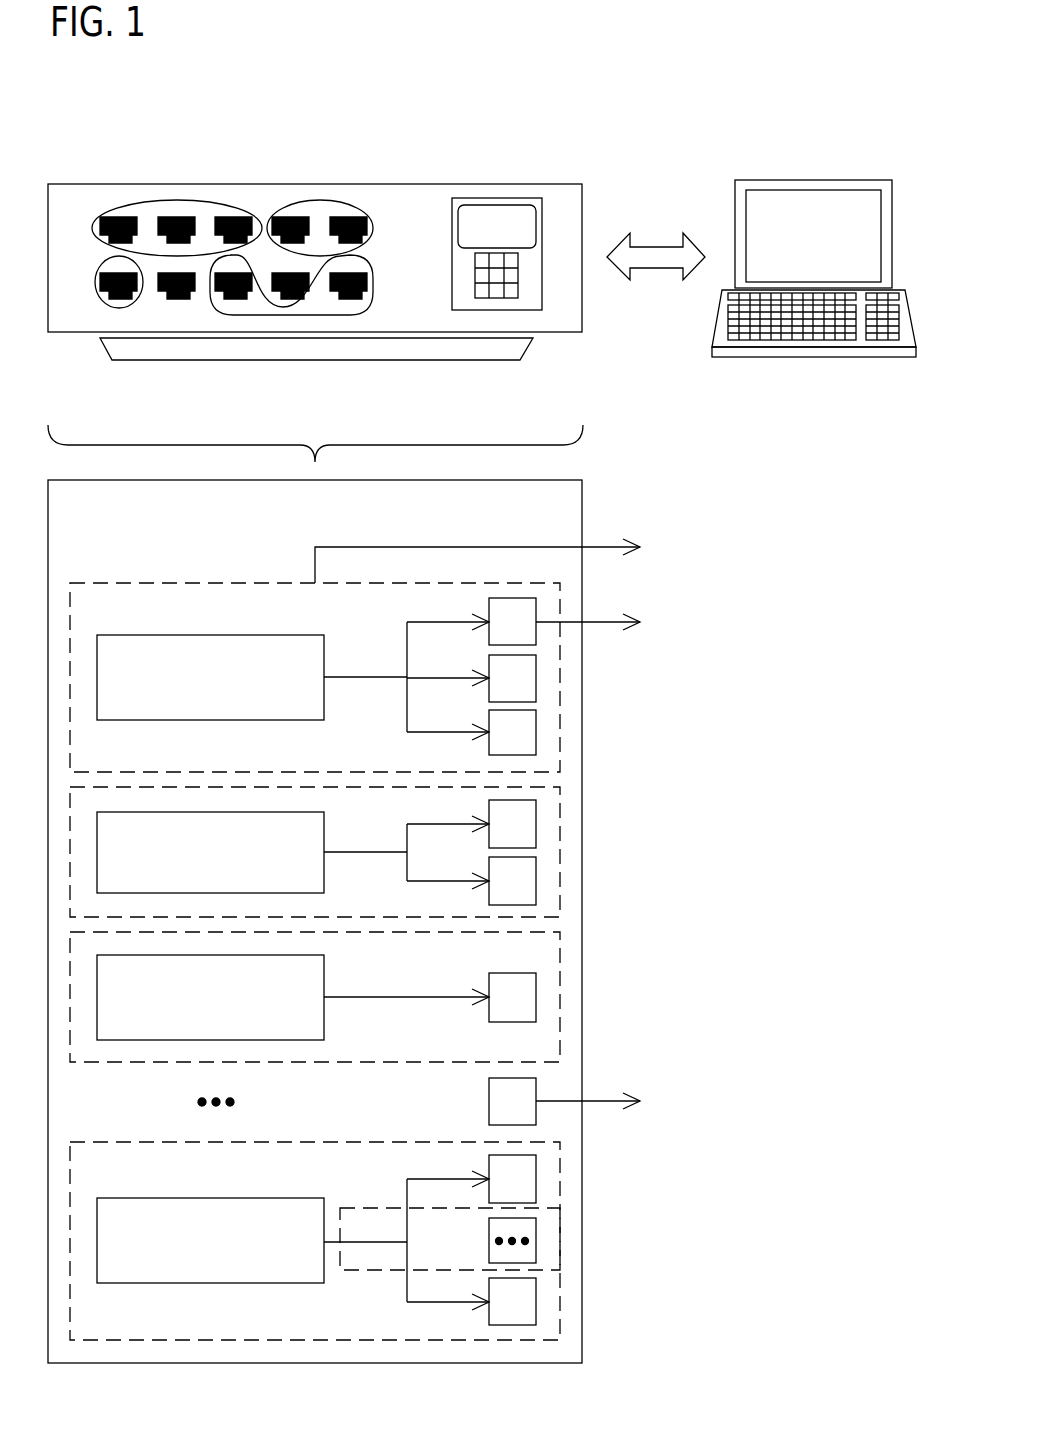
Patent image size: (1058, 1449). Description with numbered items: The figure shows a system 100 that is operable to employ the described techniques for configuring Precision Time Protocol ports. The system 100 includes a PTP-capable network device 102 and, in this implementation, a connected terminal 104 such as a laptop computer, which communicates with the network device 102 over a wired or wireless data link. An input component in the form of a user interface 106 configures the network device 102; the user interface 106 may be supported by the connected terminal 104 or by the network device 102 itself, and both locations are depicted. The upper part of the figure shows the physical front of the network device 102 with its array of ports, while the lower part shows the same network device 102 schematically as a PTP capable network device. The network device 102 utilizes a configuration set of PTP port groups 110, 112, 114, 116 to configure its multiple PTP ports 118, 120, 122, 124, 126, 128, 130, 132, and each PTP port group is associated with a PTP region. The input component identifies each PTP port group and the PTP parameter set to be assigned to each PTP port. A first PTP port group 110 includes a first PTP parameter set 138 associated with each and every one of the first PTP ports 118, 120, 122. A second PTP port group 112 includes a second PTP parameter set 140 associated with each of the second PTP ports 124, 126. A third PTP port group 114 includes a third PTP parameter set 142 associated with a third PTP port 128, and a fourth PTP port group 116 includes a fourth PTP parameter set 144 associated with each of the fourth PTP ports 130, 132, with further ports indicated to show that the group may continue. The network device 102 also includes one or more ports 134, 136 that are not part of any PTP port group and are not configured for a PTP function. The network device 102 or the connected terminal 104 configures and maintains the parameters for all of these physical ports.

The system 100 is at (754, 71).
The network device 102 is at (545, 184).
The connected terminal 104 is at (811, 180).
The user interface 106 is at (470, 198).
The first PTP port group 110 is at (560, 605).
The second PTP port group 112 is at (560, 808).
The third PTP port group 114 is at (560, 955).
The fourth PTP port group 116 is at (560, 1167).
The first PTP port 118 is at (176, 200).
The first PTP port 120 is at (536, 680).
The first PTP port 122 is at (536, 735).
The second PTP port 124 is at (318, 200).
The second PTP port 126 is at (536, 881).
The third PTP port 128 is at (119, 308).
The fourth PTP port 130 is at (293, 315).
The fourth PTP port 132 is at (536, 1302).
The port 134 is at (489, 1101).
The port 136 is at (536, 1241).
The first PTP parameter set 138 is at (210, 635).
The second PTP parameter set 140 is at (324, 815).
The third PTP parameter set 142 is at (324, 960).
The fourth PTP parameter set 144 is at (210, 1198).